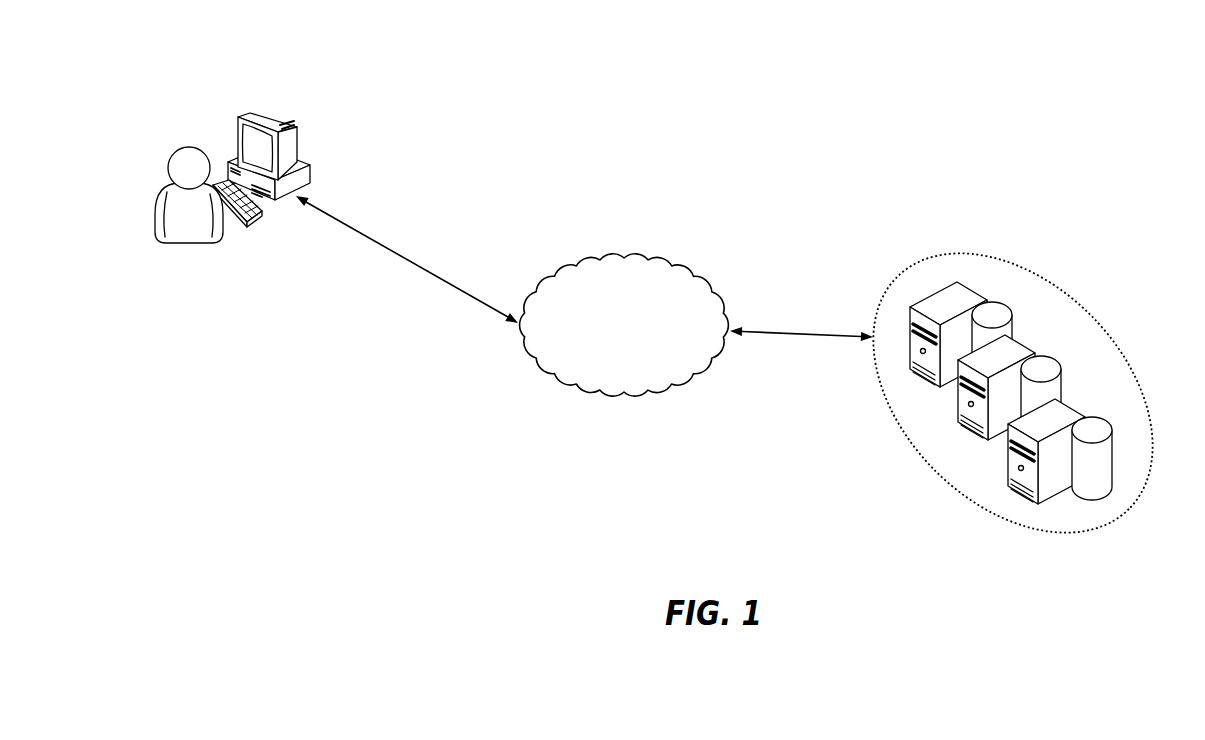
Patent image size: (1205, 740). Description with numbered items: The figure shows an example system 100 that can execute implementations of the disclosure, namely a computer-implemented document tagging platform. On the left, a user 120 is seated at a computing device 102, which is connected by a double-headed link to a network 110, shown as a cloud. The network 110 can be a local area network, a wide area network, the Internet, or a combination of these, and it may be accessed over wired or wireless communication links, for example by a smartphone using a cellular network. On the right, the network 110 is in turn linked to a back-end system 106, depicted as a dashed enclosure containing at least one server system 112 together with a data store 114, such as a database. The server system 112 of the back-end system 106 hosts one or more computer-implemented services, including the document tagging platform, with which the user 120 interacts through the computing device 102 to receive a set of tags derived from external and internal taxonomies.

The system 100 is at (782, 100).
The computing device 102 is at (237, 116).
The user 120 is at (188, 243).
The network 110 is at (625, 255).
The back-end system 106 is at (1067, 308).
The server system 112 is at (938, 290).
The data store 114 is at (993, 300).